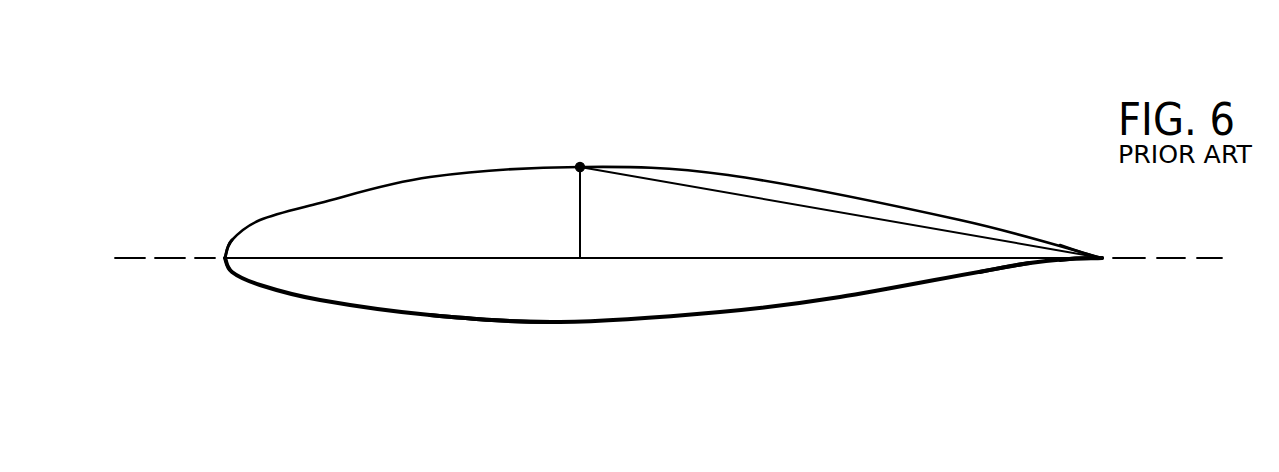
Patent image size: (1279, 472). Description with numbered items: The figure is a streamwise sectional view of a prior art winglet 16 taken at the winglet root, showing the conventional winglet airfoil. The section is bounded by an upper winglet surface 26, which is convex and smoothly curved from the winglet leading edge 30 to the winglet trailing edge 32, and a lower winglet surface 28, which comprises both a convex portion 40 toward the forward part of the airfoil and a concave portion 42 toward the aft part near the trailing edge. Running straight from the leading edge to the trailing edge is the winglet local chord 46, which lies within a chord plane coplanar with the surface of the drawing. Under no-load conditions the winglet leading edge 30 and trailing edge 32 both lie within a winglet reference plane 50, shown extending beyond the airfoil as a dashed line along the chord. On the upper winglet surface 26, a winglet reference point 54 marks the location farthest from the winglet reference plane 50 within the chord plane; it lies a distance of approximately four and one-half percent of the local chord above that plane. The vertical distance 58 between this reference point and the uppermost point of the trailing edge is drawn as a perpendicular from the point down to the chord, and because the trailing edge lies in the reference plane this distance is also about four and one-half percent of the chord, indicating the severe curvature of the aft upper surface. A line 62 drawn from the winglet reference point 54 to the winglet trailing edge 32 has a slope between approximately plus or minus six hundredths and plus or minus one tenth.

The winglet 16 is at (656, 264).
The upper winglet surface 26 is at (728, 175).
The lower winglet surface 28 is at (562, 325).
The winglet leading edge 30 is at (225, 258).
The winglet trailing edge 32 is at (1103, 257).
The convex portion 40 is at (478, 322).
The concave portion 42 is at (1030, 268).
The winglet local chord 46 is at (833, 258).
The winglet reference plane 50 is at (1175, 258).
The winglet reference point 54 is at (581, 166).
The vertical distance 58 is at (578, 225).
The line between winglet reference point and trailing edge 62 is at (815, 210).